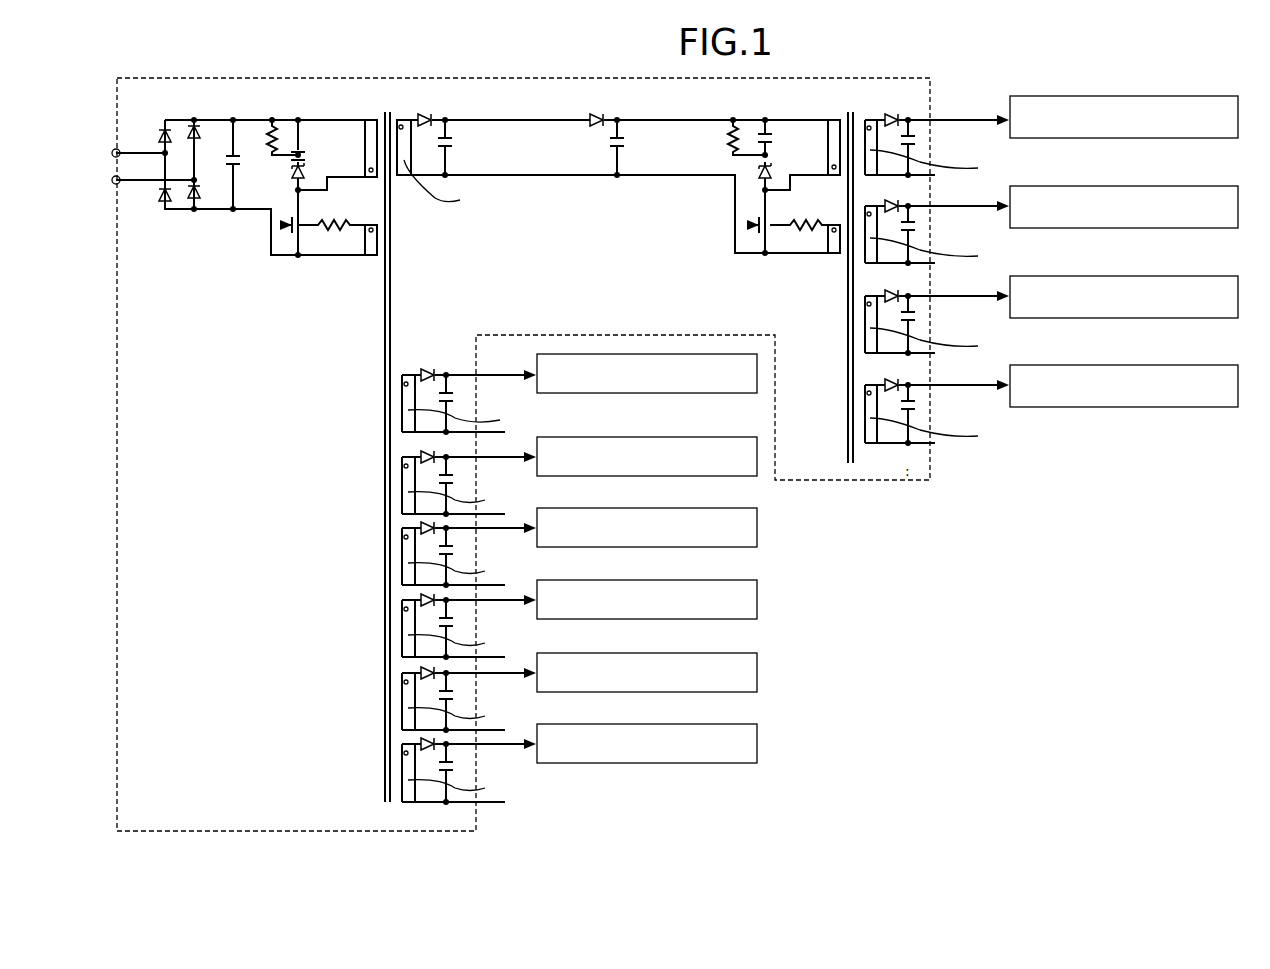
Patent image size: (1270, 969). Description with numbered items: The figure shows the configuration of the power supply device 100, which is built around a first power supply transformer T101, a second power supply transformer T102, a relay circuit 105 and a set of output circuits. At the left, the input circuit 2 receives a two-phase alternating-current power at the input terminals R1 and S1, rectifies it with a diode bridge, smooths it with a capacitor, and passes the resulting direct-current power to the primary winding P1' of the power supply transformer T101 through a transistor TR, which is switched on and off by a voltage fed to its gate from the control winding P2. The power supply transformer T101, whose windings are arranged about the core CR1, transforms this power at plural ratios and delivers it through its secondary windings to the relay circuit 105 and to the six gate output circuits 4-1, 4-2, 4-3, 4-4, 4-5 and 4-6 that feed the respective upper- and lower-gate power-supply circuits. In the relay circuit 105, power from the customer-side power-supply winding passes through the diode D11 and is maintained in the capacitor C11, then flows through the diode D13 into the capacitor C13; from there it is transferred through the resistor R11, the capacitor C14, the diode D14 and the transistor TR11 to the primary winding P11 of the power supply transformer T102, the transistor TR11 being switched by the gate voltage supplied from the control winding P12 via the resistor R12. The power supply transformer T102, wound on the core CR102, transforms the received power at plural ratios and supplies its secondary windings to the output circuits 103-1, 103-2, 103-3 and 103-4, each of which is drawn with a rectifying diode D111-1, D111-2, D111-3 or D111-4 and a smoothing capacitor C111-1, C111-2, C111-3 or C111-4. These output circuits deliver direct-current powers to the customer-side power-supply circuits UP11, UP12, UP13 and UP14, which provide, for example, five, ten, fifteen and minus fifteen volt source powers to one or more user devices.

The power supply device 100 is at (200, 78).
The input circuit 2 is at (232, 208).
The input terminal R1 is at (104, 154).
The input terminal S1 is at (104, 181).
The transistor TR is at (286, 228).
The primary winding P1' is at (351, 148).
The control winding P2 is at (362, 245).
The power supply transformer T101 is at (384, 104).
The relay circuit 105 is at (618, 162).
The diode D11 is at (425, 104).
The capacitor C11 is at (456, 142).
The diode D13 is at (598, 104).
The capacitor C13 is at (628, 142).
The resistor R11 is at (730, 135).
The capacitor C14 is at (773, 138).
The diode D14 is at (755, 175).
The primary winding P11 is at (826, 150).
The transistor TR11 is at (752, 228).
The resistor R12 is at (808, 220).
The control winding P12 is at (826, 245).
The power supply transformer T102 is at (847, 104).
The output circuit 103-1 is at (1061, 115).
The output circuit 103-2 is at (1021, 241).
The output circuit 103-3 is at (1021, 310).
The output circuit 103-4 is at (1021, 399).
The diode D111-1 is at (890, 104).
The diode D111-2 is at (884, 212).
The diode D111-3 is at (884, 302).
The diode D111-4 is at (884, 380).
The capacitor C111-1 is at (918, 140).
The capacitor C111-2 is at (918, 228).
The capacitor C111-3 is at (918, 318).
The capacitor C111-4 is at (918, 408).
The customer-side power-supply circuit UP11 is at (1182, 84).
The customer-side power-supply circuit UP12 is at (1182, 173).
The customer-side power-supply circuit UP13 is at (1182, 263).
The customer-side power-supply circuit UP14 is at (1182, 352).
The core CR102 is at (846, 422).
The core CR1 is at (384, 746).
The output circuit 4-1 is at (470, 623).
The output circuit 4-2 is at (470, 696).
The output circuit 4-3 is at (470, 810).
The output circuit 4-4 is at (470, 551).
The output circuit 4-5 is at (470, 480).
The output circuit 4-6 is at (458, 358).